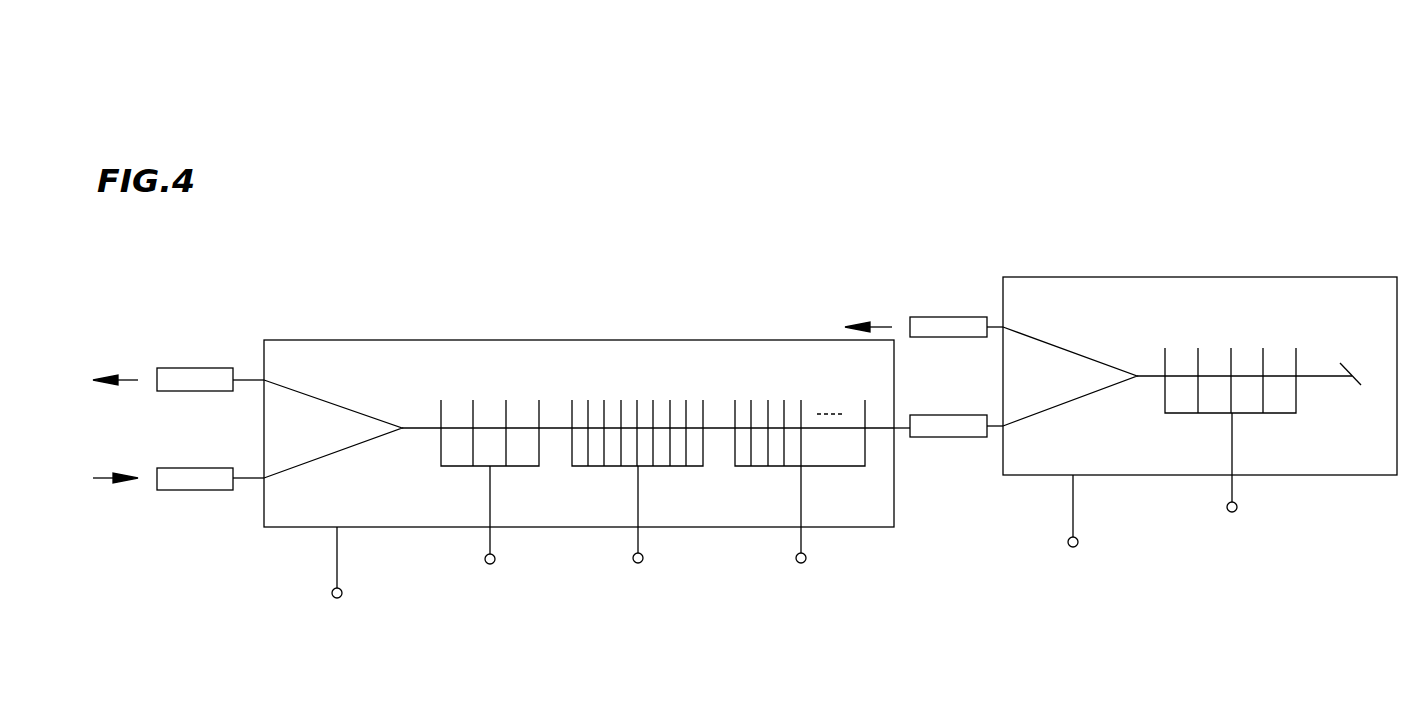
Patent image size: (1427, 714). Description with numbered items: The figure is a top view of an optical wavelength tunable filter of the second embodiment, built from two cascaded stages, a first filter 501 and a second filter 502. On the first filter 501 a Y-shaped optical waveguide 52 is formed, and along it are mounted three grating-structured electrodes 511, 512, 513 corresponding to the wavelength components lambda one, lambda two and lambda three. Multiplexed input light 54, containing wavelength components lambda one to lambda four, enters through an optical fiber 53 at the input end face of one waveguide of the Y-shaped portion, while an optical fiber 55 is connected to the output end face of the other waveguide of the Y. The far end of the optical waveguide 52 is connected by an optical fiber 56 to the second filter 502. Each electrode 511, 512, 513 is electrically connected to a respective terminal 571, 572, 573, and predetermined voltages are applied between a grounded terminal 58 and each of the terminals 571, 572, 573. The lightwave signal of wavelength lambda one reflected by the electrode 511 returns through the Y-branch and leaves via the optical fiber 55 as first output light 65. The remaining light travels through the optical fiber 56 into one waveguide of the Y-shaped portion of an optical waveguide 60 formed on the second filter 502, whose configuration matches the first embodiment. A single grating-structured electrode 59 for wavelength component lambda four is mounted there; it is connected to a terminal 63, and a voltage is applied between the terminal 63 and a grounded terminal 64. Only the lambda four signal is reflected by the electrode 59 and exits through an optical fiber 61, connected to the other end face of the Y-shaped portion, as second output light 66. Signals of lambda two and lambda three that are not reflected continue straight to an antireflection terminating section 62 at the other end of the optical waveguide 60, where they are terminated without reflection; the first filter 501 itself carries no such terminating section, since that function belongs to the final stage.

The first filter 501 is at (642, 340).
The second filter 502 is at (1201, 277).
The grating-structured electrode 511 is at (455, 468).
The grating-structured electrode 512 is at (597, 468).
The grating-structured electrode 513 is at (760, 468).
The Y-shaped optical waveguide 52 is at (352, 403).
The optical fiber 53 is at (163, 492).
The multiplexed input light 54 is at (95, 477).
The optical fiber 55 is at (194, 368).
The optical fiber 56 is at (920, 438).
The terminal 571 is at (488, 565).
The terminal 572 is at (637, 564).
The terminal 573 is at (799, 564).
The terminal 58 is at (335, 599).
The grating-structured electrode 59 is at (1190, 415).
The optical waveguide 60 is at (1080, 355).
The optical fiber 61 is at (935, 316).
The antireflection terminating section 62 is at (1343, 363).
The terminal 63 is at (1229, 513).
The terminal 64 is at (1071, 548).
The first output light 65 is at (123, 379).
The second output light 66 is at (885, 327).